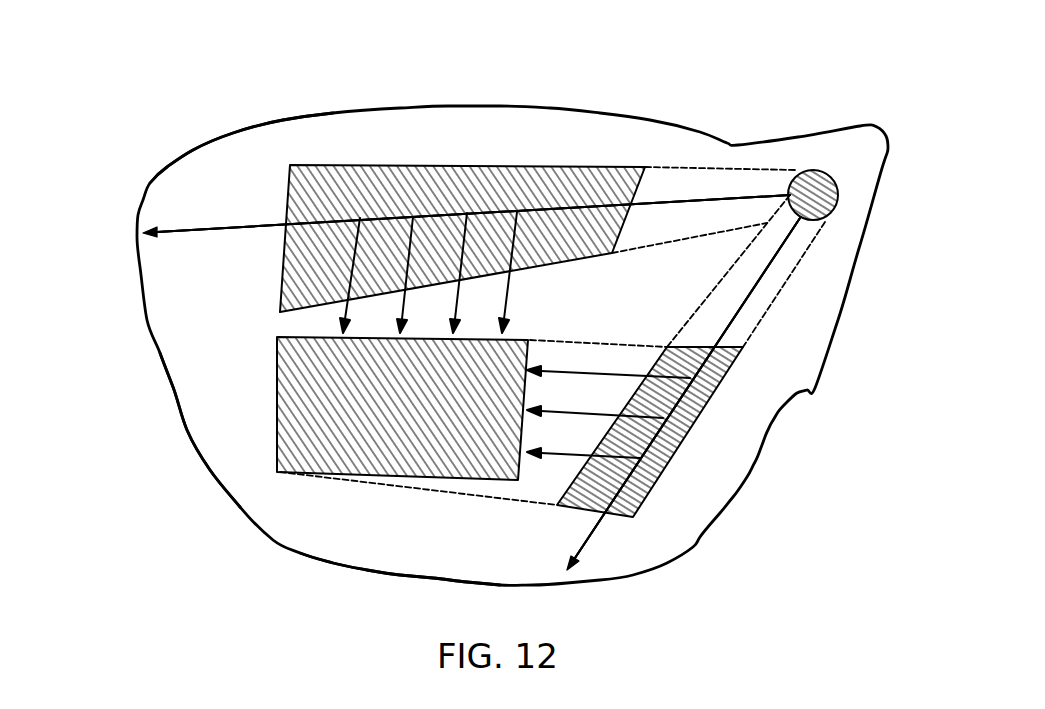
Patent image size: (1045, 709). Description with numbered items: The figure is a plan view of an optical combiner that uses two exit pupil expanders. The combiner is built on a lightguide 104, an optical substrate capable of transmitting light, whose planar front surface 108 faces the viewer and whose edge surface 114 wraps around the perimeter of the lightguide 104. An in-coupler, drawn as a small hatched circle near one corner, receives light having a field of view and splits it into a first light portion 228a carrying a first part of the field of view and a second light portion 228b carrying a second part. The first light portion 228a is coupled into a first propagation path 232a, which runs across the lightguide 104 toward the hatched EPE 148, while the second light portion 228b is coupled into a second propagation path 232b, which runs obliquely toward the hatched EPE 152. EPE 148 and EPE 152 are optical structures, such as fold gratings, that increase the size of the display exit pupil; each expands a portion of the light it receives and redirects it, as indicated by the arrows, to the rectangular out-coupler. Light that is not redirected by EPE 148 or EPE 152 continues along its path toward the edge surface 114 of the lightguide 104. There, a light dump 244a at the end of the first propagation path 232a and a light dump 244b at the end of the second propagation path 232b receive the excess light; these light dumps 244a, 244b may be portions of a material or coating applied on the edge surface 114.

The lightguide 104 is at (185, 433).
The front surface 108 is at (210, 182).
The edge surface 114 is at (335, 563).
The EPE 148 is at (415, 183).
The EPE 152 is at (682, 427).
The first light portion 228a is at (753, 183).
The second light portion 228b is at (790, 248).
The first propagation path 232a is at (702, 200).
The second propagation path 232b is at (750, 293).
The light dump 244a is at (133, 247).
The light dump 244b is at (660, 567).